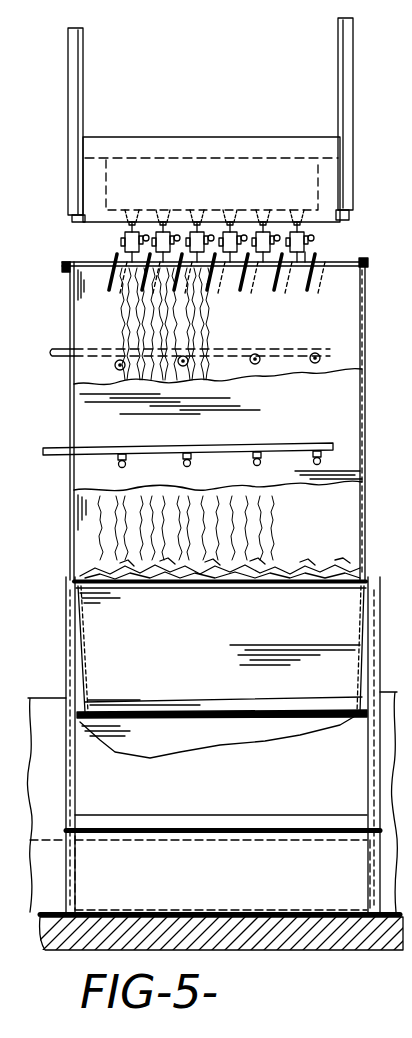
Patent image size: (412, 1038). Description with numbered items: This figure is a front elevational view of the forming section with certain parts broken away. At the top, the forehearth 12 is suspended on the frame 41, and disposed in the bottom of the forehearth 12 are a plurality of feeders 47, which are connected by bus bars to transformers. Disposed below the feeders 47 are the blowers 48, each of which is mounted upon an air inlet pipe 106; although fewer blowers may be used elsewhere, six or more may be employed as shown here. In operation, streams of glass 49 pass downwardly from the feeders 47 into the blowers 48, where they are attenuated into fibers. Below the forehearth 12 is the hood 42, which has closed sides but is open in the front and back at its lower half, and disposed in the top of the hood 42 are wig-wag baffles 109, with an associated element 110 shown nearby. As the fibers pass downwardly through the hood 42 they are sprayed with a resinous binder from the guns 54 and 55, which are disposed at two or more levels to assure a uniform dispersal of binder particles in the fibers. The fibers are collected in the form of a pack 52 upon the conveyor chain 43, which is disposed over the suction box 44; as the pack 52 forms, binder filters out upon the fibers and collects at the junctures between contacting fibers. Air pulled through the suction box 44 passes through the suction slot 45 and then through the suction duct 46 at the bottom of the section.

The forehearth 12 is at (147, 145).
The frame 41 is at (347, 60).
The hood 42 is at (357, 462).
The conveyor chain 43 is at (124, 588).
The suction box 44 is at (95, 637).
The suction slot 45 is at (183, 705).
The suction duct 46 is at (53, 905).
The feeder 47 is at (124, 230).
The blower 48 is at (224, 229).
The stream of glass 49 is at (140, 227).
The pack 52 is at (323, 533).
The binder gun 54 is at (311, 359).
The binder gun 55 is at (255, 462).
The air inlet pipe 106 is at (313, 234).
The wig-wag baffle 109 is at (316, 311).
The deflector stem 110 is at (307, 243).